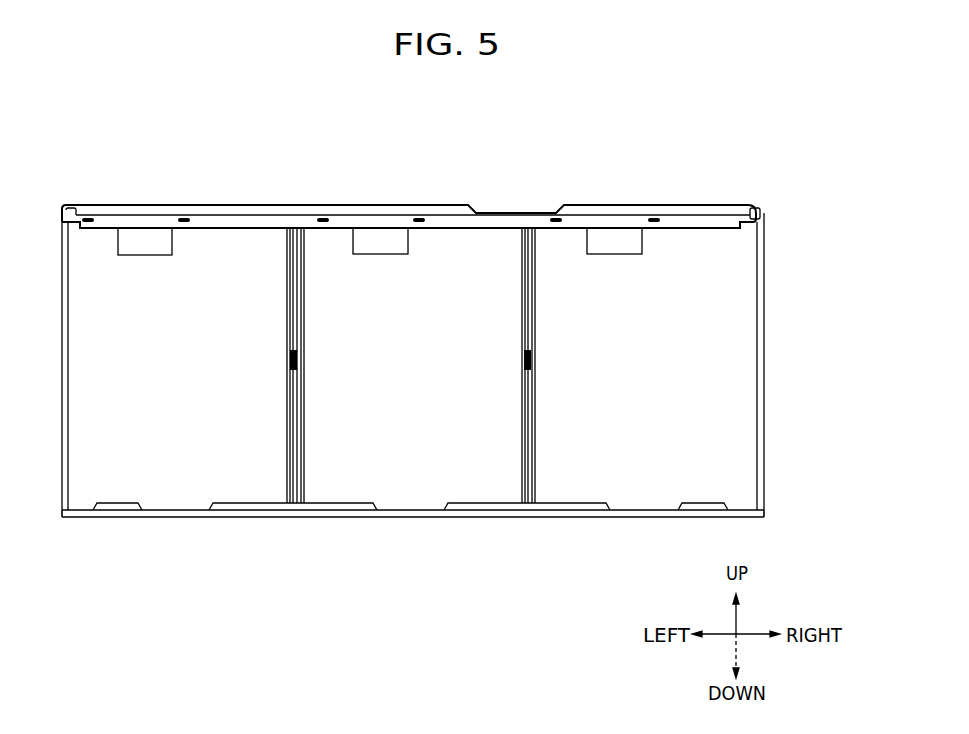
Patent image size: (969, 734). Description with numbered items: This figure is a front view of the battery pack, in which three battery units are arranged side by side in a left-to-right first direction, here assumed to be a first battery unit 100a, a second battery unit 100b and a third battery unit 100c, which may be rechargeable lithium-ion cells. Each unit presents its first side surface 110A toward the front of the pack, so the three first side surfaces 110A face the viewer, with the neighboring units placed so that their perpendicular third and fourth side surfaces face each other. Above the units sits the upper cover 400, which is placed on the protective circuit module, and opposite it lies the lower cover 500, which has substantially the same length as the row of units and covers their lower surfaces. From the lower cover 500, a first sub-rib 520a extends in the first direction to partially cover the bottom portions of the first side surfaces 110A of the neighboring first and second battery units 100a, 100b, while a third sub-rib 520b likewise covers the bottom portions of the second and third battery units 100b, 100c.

The first battery unit 100a is at (226, 242).
The second battery unit 100b is at (461, 240).
The third battery unit 100c is at (695, 240).
The first side surface 110A is at (200, 381).
The upper cover 400 is at (753, 200).
The lower cover 500 is at (766, 512).
The first sub-rib 520a is at (272, 507).
The third sub-rib 520b is at (507, 505).